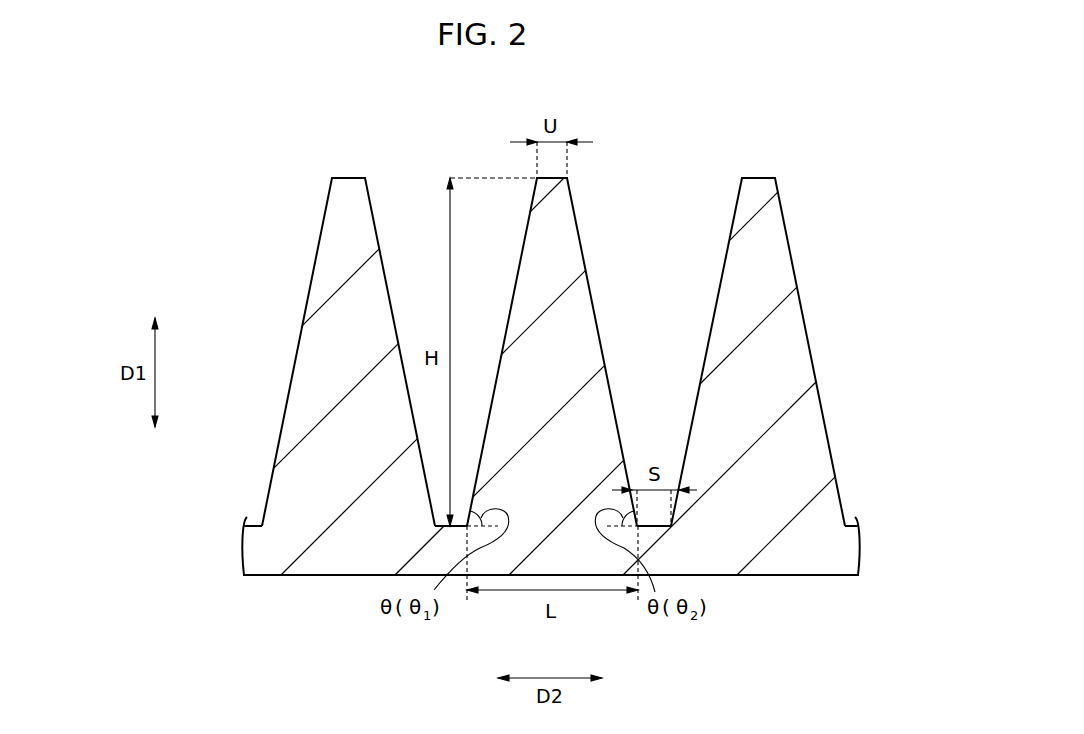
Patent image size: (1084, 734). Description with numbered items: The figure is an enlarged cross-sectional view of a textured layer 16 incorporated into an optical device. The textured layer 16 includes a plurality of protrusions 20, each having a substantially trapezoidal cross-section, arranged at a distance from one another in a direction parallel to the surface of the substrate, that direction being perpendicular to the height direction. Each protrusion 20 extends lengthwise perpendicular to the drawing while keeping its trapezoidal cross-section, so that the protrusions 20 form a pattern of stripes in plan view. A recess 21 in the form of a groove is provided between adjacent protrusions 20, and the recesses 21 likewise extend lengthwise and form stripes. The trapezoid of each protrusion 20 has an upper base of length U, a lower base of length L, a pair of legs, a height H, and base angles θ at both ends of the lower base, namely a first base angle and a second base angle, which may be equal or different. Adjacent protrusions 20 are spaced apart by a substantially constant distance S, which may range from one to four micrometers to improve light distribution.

The textured layer 16 is at (827, 432).
The protrusion 20 is at (327, 227).
The recess 21 is at (427, 256).